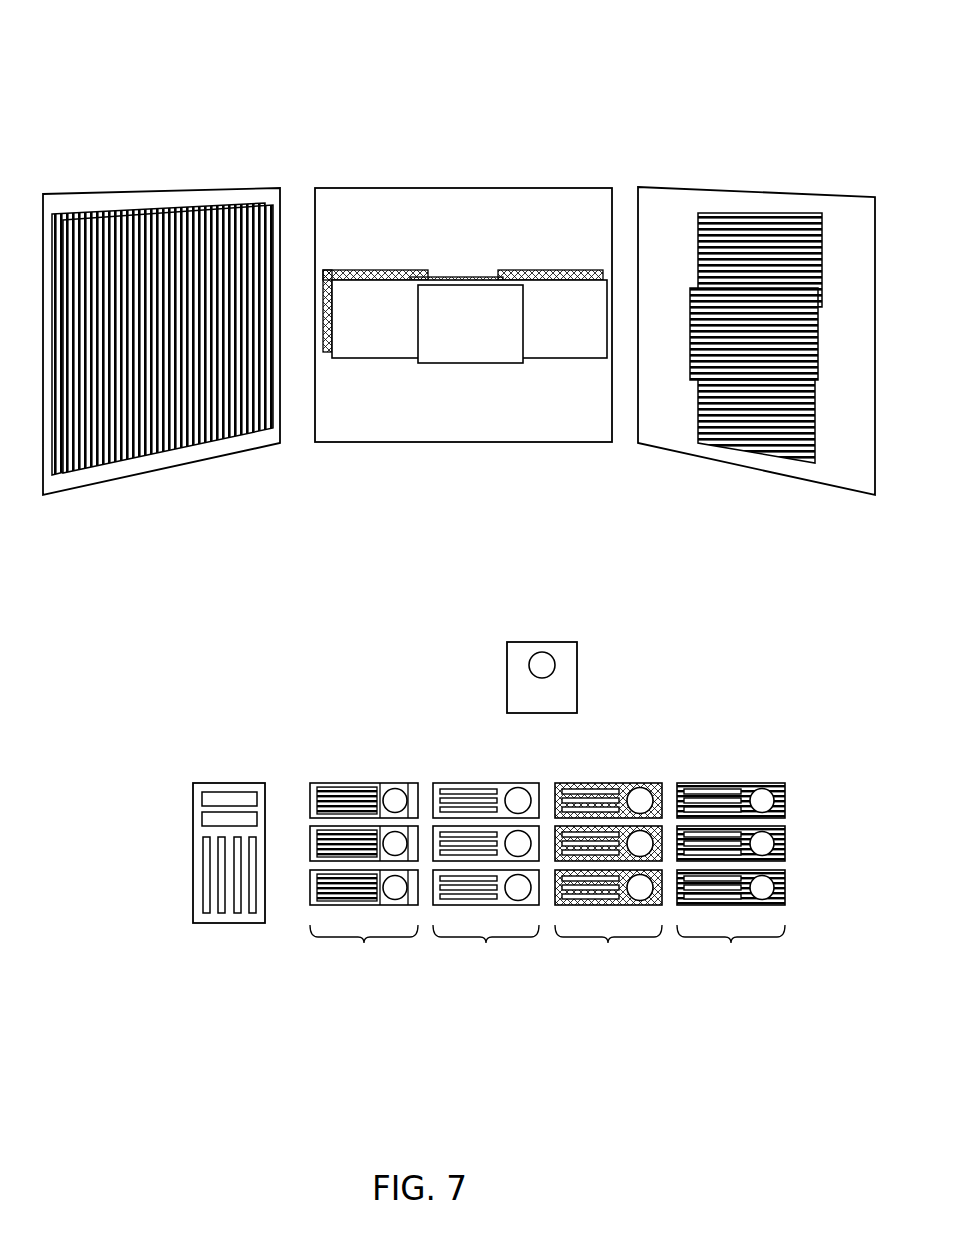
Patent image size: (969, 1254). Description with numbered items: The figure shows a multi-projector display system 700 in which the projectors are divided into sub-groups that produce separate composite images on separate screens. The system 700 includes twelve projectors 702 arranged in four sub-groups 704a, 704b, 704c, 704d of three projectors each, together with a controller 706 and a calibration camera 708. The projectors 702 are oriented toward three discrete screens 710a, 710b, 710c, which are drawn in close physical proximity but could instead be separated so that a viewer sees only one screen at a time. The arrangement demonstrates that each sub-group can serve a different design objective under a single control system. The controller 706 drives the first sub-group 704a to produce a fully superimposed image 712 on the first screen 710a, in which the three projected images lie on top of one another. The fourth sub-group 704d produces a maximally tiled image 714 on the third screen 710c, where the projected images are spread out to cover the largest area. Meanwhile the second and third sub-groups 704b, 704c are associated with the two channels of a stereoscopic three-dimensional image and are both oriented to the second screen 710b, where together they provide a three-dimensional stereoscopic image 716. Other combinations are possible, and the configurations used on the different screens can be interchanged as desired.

The multi-projector display system 700 is at (331, 110).
The projectors 702 is at (447, 782).
The first sub-group 704a is at (364, 880).
The second sub-group 704b is at (486, 880).
The third sub-group 704c is at (608, 880).
The fourth sub-group 704d is at (731, 880).
The controller 706 is at (205, 783).
The calibration camera 708 is at (565, 678).
The first screen 710a is at (161, 318).
The second screen 710b is at (463, 307).
The third screen 710c is at (752, 315).
The fully superimposed image 712 is at (210, 198).
The maximally tiled image 714 is at (730, 202).
The 3D stereoscopic image 716 is at (420, 259).